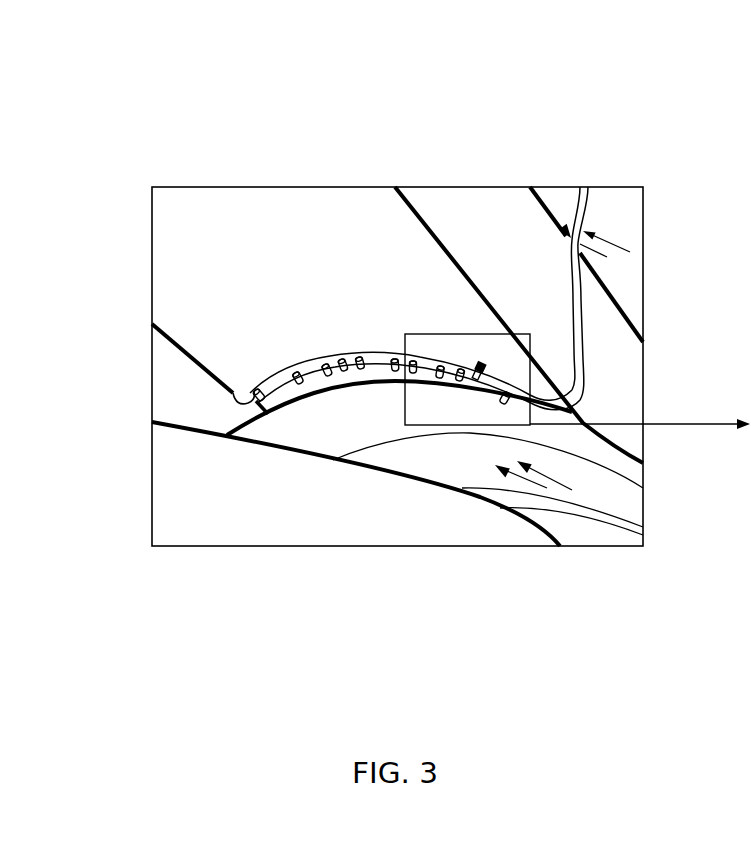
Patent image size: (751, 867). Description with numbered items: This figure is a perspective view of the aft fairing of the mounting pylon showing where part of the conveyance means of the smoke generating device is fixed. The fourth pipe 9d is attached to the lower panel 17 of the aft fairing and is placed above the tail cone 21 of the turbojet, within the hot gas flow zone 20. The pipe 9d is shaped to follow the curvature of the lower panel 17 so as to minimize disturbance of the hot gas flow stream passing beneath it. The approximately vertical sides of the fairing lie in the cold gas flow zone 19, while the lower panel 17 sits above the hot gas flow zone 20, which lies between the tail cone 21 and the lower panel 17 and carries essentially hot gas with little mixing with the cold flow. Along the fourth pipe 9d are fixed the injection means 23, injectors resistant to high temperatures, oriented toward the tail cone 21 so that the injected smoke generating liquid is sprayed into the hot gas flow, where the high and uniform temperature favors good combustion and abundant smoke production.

The lower panel 17 is at (185, 290).
The cold gas flow zone 19 is at (615, 232).
The fourth pipe 9d is at (573, 397).
The tail cone 21 is at (278, 517).
The injection means 23 is at (360, 385).
The hot gas flow zone 20 is at (556, 505).